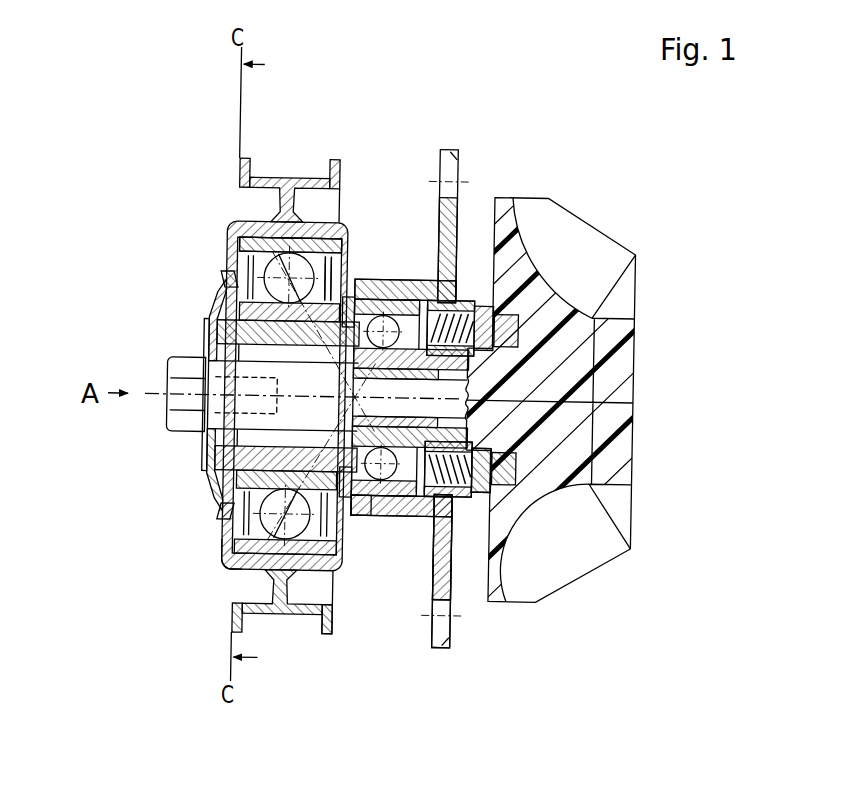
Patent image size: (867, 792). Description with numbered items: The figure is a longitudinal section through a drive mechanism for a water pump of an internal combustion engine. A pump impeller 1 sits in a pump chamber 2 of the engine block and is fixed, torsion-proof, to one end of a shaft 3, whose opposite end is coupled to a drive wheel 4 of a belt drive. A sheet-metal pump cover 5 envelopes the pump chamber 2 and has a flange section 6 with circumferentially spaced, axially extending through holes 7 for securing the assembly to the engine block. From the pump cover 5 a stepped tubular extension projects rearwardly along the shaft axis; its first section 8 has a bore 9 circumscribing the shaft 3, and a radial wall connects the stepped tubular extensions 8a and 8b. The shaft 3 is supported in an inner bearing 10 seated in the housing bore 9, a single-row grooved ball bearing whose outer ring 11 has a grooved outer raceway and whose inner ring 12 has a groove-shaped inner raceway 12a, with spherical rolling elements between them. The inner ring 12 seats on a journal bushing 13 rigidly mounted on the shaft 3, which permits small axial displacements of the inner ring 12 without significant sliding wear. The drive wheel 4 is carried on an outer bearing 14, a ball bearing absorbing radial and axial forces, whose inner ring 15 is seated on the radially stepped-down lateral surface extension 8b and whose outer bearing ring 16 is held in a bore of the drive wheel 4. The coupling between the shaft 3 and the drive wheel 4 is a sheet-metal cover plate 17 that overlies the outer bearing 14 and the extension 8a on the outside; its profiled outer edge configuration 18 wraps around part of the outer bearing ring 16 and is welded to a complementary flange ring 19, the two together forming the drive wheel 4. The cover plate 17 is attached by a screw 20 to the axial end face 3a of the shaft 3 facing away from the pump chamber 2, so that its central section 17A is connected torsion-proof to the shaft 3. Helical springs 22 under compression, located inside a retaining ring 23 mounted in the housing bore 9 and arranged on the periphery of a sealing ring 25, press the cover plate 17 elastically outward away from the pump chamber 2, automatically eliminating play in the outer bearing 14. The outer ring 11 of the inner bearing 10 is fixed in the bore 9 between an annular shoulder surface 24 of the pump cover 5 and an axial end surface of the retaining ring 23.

The pump impeller 1 is at (617, 253).
The pump chamber 2 is at (467, 523).
The shaft 3 is at (295, 352).
The axial end face 3a is at (225, 417).
The drive wheel 4 is at (233, 623).
The pump cover 5 is at (470, 140).
The flange section 6 is at (441, 575).
The through holes 7 is at (447, 627).
The first section 8 is at (235, 495).
The stepped tubular extension 8a is at (367, 495).
The lateral surface extension 8b is at (329, 256).
The housing bore 9 is at (210, 382).
The inner bearing 10 is at (374, 482).
The outer ring 11 is at (401, 310).
The inner ring 12 is at (455, 348).
The inner raceway 12a is at (383, 345).
The journal bushing 13 is at (472, 436).
The outer bearing 14 is at (288, 240).
The inner ring 15 is at (223, 287).
The outer bearing ring 16 is at (240, 222).
The cover plate 17 is at (210, 470).
The central section 17A is at (223, 273).
The profiled outer edge configuration 18 is at (233, 565).
The flange ring 19 is at (308, 615).
The screw 20 is at (182, 363).
The helical springs 22 is at (490, 275).
The retaining ring 23 is at (468, 292).
The annular shoulder surface 24 is at (343, 292).
The sealing ring 25 is at (545, 513).